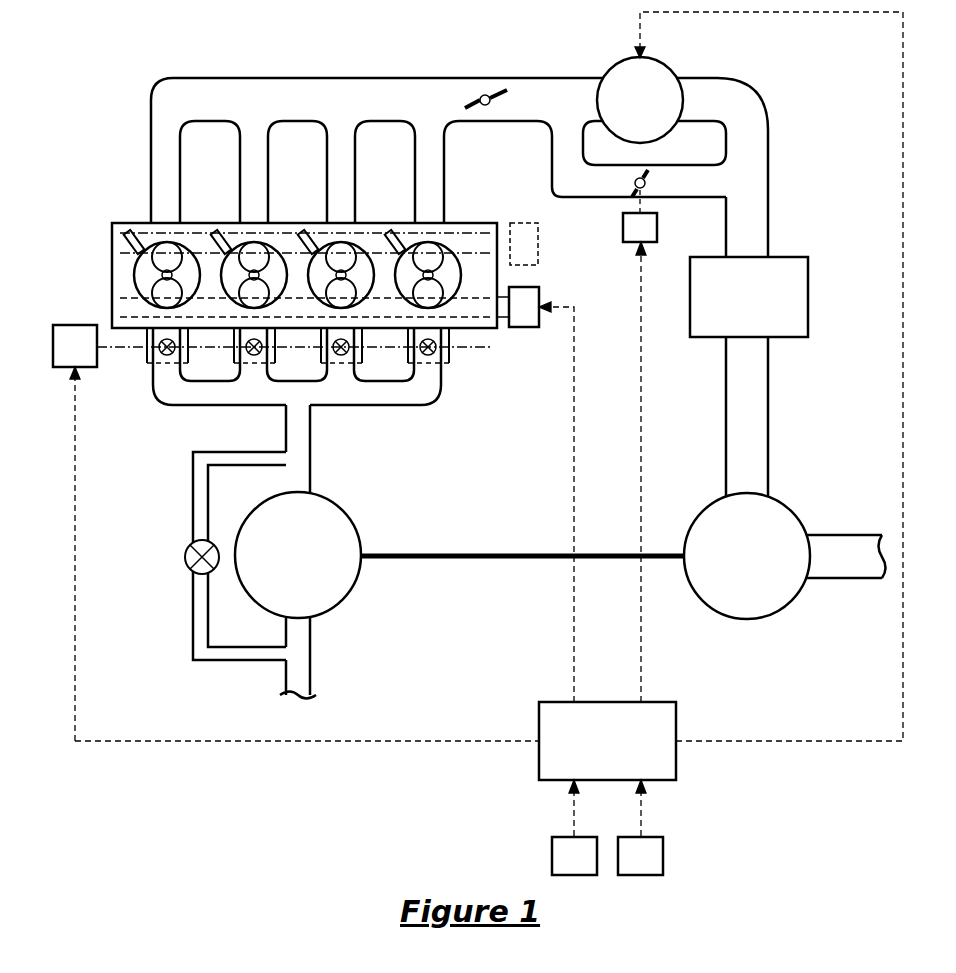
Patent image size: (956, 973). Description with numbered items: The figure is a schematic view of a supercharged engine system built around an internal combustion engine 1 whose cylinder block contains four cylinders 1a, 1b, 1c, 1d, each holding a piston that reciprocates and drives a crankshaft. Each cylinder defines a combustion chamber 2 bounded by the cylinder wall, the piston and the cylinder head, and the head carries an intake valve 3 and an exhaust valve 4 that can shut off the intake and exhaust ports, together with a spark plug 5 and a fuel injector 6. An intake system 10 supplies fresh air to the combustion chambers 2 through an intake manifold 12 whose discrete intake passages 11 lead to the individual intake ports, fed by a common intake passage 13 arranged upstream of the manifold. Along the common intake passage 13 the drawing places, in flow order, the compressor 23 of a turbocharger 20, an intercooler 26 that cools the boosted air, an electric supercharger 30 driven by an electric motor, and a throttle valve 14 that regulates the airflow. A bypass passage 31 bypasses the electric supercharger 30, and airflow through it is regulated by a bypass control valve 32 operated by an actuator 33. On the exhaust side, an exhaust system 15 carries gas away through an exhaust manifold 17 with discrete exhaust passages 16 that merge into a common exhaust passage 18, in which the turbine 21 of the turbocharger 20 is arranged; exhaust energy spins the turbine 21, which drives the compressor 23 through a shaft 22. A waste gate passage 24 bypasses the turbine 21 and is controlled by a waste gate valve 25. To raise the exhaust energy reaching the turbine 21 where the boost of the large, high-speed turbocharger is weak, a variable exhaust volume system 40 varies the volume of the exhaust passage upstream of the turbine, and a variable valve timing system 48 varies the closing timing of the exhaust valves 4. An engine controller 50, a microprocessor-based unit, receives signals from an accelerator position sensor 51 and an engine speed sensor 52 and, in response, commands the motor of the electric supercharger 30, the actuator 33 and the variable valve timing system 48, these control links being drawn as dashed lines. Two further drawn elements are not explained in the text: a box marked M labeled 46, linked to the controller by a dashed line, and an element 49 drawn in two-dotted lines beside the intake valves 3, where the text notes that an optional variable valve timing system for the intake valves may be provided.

The internal combustion engine 1 is at (480, 218).
The cylinder 1a is at (135, 266).
The cylinder 1b is at (262, 230).
The cylinder 1c is at (352, 230).
The cylinder 1d is at (497, 248).
The combustion chamber 2 is at (135, 292).
The intake valve 3 is at (172, 250).
The exhaust valve 4 is at (158, 300).
The spark plug 5 is at (162, 280).
The fuel injector 6 is at (128, 233).
The intake system 10 is at (768, 104).
The discrete intake passages 11 is at (151, 140).
The intake manifold 12 is at (300, 78).
The common intake passage 13 is at (770, 167).
The throttle valve 14 is at (486, 95).
The exhaust system 15 is at (318, 476).
The discrete exhaust passages 16 is at (162, 392).
The exhaust manifold 17 is at (395, 406).
The common exhaust passage 18 is at (312, 430).
The turbocharger 20 is at (806, 610).
The turbine 21 is at (345, 600).
The shaft 22 is at (480, 560).
The compressor 23 is at (800, 507).
The waste gate passage 24 is at (194, 612).
The waste gate valve 25 is at (186, 548).
The intercooler 26 is at (808, 292).
The electric supercharger 30 is at (650, 60).
The bypass passage 31 is at (608, 198).
The bypass control valve 32 is at (648, 178).
The actuator 33 is at (658, 242).
The variable exhaust volume system 40 is at (458, 368).
The valve actuator motor 46 is at (60, 370).
The variable valve timing system 48 is at (539, 327).
The sensor 49 is at (540, 233).
The engine controller 50 is at (676, 722).
The accelerator position sensor 51 is at (552, 857).
The engine speed sensor 52 is at (663, 857).